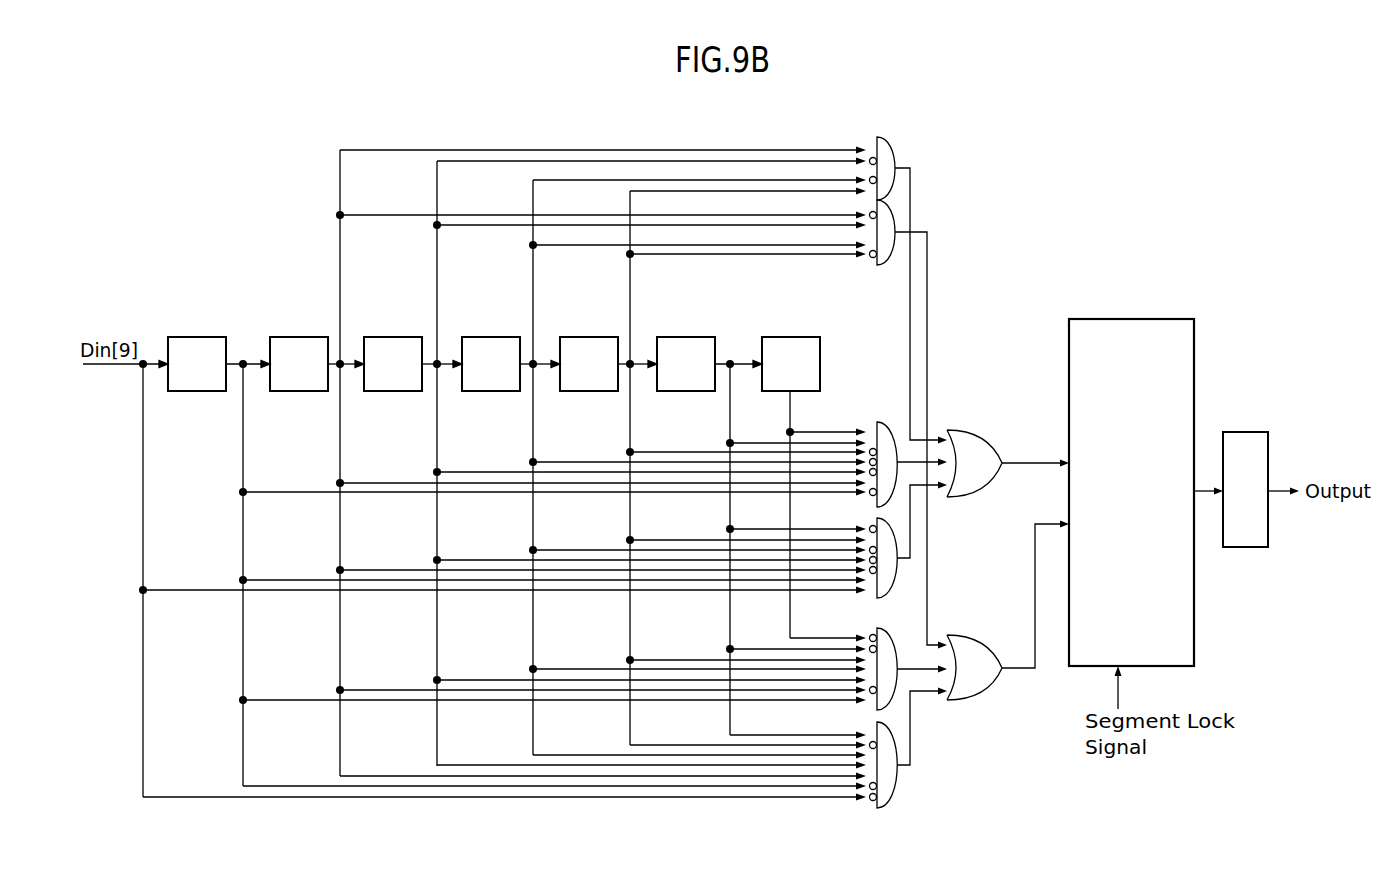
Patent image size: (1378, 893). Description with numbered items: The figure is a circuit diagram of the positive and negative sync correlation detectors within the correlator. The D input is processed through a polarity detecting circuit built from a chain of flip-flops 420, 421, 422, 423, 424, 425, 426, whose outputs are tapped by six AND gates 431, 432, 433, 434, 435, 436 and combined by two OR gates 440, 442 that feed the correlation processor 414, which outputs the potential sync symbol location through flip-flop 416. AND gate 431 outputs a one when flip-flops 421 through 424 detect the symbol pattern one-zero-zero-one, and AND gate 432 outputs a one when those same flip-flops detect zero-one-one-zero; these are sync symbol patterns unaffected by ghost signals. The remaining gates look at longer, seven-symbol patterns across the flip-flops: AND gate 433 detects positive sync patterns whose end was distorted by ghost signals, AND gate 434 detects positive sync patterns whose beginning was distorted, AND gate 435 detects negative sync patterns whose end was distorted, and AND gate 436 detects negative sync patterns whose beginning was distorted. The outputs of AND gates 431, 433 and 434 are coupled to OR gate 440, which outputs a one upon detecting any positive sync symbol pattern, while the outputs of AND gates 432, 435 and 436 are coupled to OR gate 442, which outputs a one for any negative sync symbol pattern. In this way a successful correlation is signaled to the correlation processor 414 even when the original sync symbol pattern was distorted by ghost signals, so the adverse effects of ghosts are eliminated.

The correlation processor 414 is at (1194, 630).
The flip-flop 416 is at (1244, 432).
The flip-flop 420 is at (197, 337).
The flip-flop 421 is at (298, 337).
The flip-flop 422 is at (393, 337).
The flip-flop 423 is at (492, 337).
The flip-flop 424 is at (589, 337).
The flip-flop 425 is at (686, 337).
The flip-flop 426 is at (791, 337).
The AND gate 431 is at (893, 150).
The AND gate 432 is at (889, 268).
The AND gate 433 is at (880, 421).
The AND gate 434 is at (872, 598).
The AND gate 435 is at (895, 628).
The AND gate 436 is at (892, 803).
The OR gate 440 is at (986, 432).
The OR gate 442 is at (985, 695).